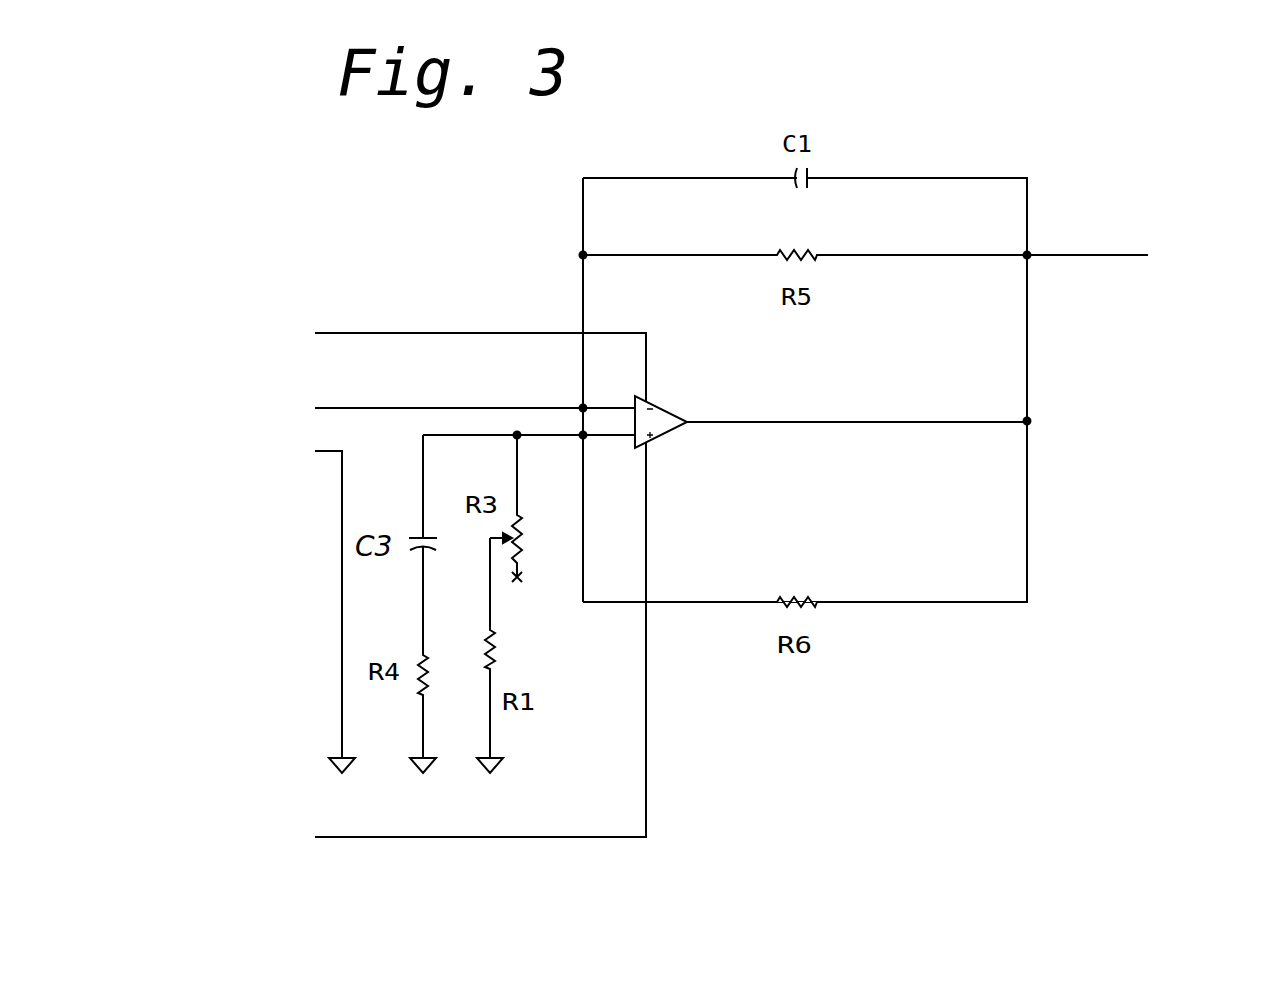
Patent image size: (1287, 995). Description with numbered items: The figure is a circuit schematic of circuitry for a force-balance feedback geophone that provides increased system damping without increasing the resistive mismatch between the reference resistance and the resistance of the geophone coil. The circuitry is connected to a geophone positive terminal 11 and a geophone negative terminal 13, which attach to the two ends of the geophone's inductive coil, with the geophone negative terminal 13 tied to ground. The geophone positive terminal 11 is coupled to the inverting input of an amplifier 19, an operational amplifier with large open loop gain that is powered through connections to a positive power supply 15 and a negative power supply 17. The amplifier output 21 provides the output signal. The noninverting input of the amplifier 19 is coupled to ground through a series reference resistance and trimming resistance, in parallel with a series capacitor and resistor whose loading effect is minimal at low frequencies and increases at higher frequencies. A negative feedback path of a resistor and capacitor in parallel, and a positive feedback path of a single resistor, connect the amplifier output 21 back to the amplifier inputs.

The geophone positive terminal 11 is at (397, 408).
The geophone negative terminal 13 is at (335, 452).
The positive power supply 15 is at (415, 333).
The negative power supply 17 is at (455, 837).
The amplifier 19 is at (662, 402).
The amplifier output 21 is at (1113, 258).